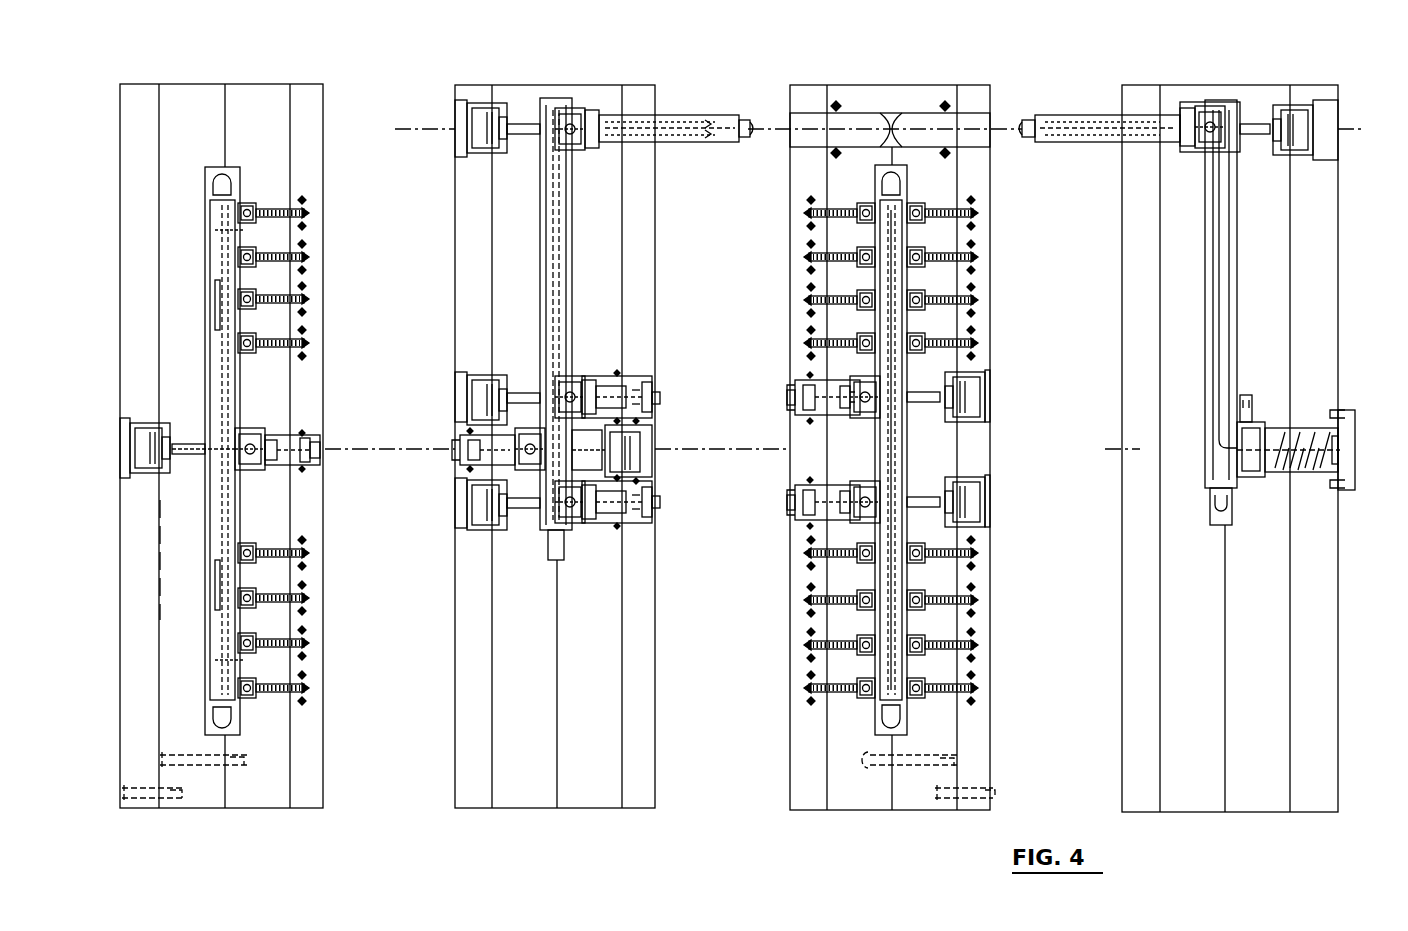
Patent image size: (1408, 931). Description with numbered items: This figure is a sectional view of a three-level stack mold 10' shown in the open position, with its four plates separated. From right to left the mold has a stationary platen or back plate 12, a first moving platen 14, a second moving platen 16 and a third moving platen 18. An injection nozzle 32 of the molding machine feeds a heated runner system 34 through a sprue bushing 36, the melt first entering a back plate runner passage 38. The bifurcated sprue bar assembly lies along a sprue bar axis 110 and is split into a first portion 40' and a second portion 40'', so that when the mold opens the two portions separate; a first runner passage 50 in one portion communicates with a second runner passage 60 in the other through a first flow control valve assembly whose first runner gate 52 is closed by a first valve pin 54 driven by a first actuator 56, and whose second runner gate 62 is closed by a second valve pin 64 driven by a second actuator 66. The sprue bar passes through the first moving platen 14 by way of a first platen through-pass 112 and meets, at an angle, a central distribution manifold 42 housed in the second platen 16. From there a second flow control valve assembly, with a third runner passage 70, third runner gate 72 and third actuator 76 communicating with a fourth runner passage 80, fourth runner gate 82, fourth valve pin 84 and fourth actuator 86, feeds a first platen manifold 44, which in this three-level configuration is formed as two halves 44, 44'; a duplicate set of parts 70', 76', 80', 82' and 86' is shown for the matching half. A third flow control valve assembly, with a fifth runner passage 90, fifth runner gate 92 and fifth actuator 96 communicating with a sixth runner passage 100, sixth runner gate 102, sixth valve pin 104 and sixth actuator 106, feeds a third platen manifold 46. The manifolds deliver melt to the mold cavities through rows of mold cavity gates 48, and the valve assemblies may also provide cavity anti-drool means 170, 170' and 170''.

The three-level stack mold 10' is at (277, 45).
The stationary platen 12 is at (1245, 795).
The first moving platen 14 is at (855, 810).
The second moving platen 16 is at (515, 808).
The third moving platen 18 is at (200, 808).
The injection nozzle 32 is at (1312, 428).
The heated runner system 34 is at (1240, 290).
The sprue bushing 36 is at (1255, 477).
The back plate runner passage 38 is at (1237, 320).
The first portion of sprue bar assembly 40' is at (1107, 85).
The second portion of sprue bar assembly 40'' is at (669, 82).
The central distribution manifold 42 is at (540, 232).
The first platen manifold 44 is at (984, 450).
The half of first platen manifold 44' is at (978, 450).
The third platen manifold 46 is at (207, 375).
The mold cavity gates 48 is at (306, 257).
The first runner passage 50 is at (1213, 102).
The first runner gate 52 is at (1028, 142).
The first valve pin 54 is at (1085, 142).
The first actuator 56 is at (1298, 103).
The second runner passage 60 is at (642, 115).
The second runner gate 62 is at (745, 140).
The second valve pin 64 is at (700, 142).
The second actuator 66 is at (488, 103).
The third runner passage 70 is at (603, 368).
The third runner passage 70' is at (636, 532).
The third runner gate 72 is at (660, 397).
The third actuator 76 is at (471, 380).
The third actuator 76' is at (475, 534).
The fourth runner passage 80 is at (837, 429).
The fourth runner passage 80' is at (812, 527).
The fourth runner gate 82 is at (764, 406).
The fourth runner gate 82' is at (764, 491).
The fourth valve pin 84 is at (833, 415).
The fourth actuator 86 is at (976, 379).
The fourth actuator 86' is at (986, 501).
The fifth runner passage 90 is at (526, 472).
The fifth runner gate 92 is at (465, 455).
The fifth actuator 96 is at (652, 460).
The sixth runner passage 100 is at (275, 470).
The sixth runner gate 102 is at (322, 455).
The sixth valve pin 104 is at (275, 440).
The sixth actuator 106 is at (150, 462).
The sprue bar axis 110 is at (1325, 130).
The first platen through-pass 112 is at (858, 113).
The cavity anti-drool means 170 is at (733, 95).
The cavity anti-drool means 170' is at (786, 417).
The cavity anti-drool means 170'' is at (345, 491).